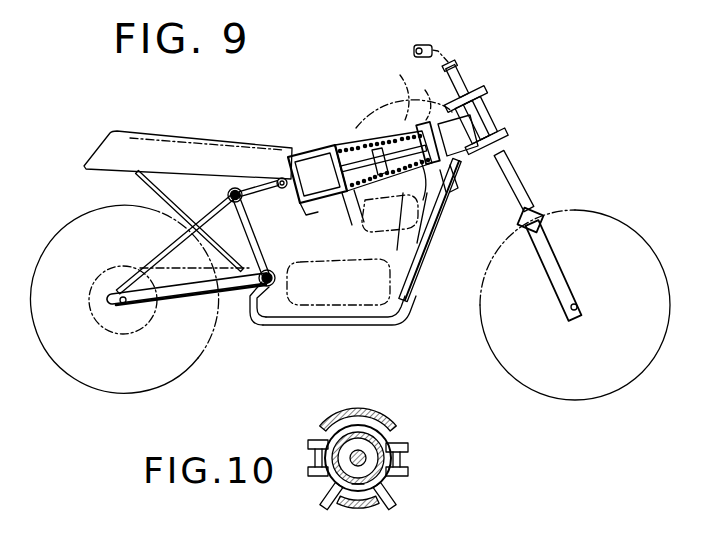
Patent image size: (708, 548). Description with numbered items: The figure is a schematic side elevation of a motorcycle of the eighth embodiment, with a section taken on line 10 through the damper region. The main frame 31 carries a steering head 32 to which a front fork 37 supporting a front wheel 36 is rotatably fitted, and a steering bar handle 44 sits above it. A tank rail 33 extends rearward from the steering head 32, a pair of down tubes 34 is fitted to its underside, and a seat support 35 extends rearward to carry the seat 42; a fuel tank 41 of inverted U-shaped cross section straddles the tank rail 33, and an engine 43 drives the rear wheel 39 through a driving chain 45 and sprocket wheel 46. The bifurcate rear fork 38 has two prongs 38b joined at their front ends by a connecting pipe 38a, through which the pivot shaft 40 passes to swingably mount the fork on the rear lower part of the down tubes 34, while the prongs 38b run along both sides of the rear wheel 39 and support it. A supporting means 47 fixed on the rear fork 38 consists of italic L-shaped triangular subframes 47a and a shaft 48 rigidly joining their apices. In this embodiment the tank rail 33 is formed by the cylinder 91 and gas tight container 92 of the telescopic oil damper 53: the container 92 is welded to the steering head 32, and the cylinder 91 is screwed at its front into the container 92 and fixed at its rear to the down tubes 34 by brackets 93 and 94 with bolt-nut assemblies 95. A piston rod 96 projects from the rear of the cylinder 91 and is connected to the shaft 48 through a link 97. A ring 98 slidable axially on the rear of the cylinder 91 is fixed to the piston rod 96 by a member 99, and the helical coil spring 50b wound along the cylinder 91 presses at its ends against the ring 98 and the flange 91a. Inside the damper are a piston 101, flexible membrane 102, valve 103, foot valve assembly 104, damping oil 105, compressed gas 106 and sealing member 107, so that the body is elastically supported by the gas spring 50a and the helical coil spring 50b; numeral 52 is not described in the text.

In FIG. 9, the section line 10 is at (328, 124).
In FIG. 9, the main frame 31 is at (396, 321).
In FIG. 9, the steering head 32 is at (497, 125).
In FIG. 9, the tank rail 33 is at (392, 110).
In FIG. 9, the down tubes 34 is at (411, 292).
In FIG. 10, the down tubes 34 is at (392, 498).
In FIG. 9, the seat support 35 is at (137, 176).
In FIG. 9, the front wheel 36 is at (641, 362).
In FIG. 9, the front fork 37 is at (566, 283).
In FIG. 9, the bifurcate rear fork 38 is at (176, 304).
In FIG. 9, the connecting pipe 38a is at (275, 279).
In FIG. 9, the prongs 38b is at (229, 298).
In FIG. 9, the rear wheel 39 is at (45, 357).
In FIG. 9, the pivot shaft 40 is at (250, 243).
In FIG. 9, the fuel tank 41 is at (332, 122).
In FIG. 9, the seat 42 is at (98, 148).
In FIG. 9, the engine 43 is at (360, 305).
In FIG. 9, the steering bar handle 44 is at (440, 49).
In FIG. 9, the driving chain 45 is at (149, 325).
In FIG. 9, the sprocket wheel 46 is at (90, 307).
In FIG. 9, the supporting means 47 is at (159, 251).
In FIG. 9, the triangular subframes 47a is at (291, 245).
In FIG. 9, the shaft 48 is at (230, 195).
In FIG. 9, the gas spring 50a is at (466, 158).
In FIG. 9, the helical coil spring 50b is at (418, 133).
In FIG. 9, the coil spring 52 is at (372, 125).
In FIG. 9, the telescopic oil damper 53 is at (360, 148).
In FIG. 9, the cylinder 91 is at (395, 238).
In FIG. 10, the cylinder 91 is at (358, 486).
In FIG. 9, the flange 91a is at (461, 198).
In FIG. 9, the gas tight container 92 is at (454, 184).
In FIG. 9, the bracket 93 is at (350, 202).
In FIG. 10, the bracket 93 is at (332, 484).
In FIG. 9, the bracket 94 is at (302, 150).
In FIG. 10, the bracket 94 is at (332, 440).
In FIG. 10, the bolt-nut assemblies 95 is at (308, 446).
In FIG. 9, the piston rod 96 is at (281, 190).
In FIG. 10, the piston rod 96 is at (366, 452).
In FIG. 9, the link 97 is at (259, 180).
In FIG. 9, the ring 98 is at (392, 222).
In FIG. 9, the member 99 is at (298, 206).
In FIG. 10, the member 99 is at (373, 417).
In FIG. 9, the piston 101 is at (352, 140).
In FIG. 9, the flexible membrane 102 is at (487, 96).
In FIG. 9, the valve 103 is at (428, 112).
In FIG. 9, the foot valve assembly 104 is at (408, 96).
In FIG. 9, the damping oil 105 is at (402, 164).
In FIG. 9, the compressed gas 106 is at (508, 140).
In FIG. 9, the sealing member 107 is at (286, 154).